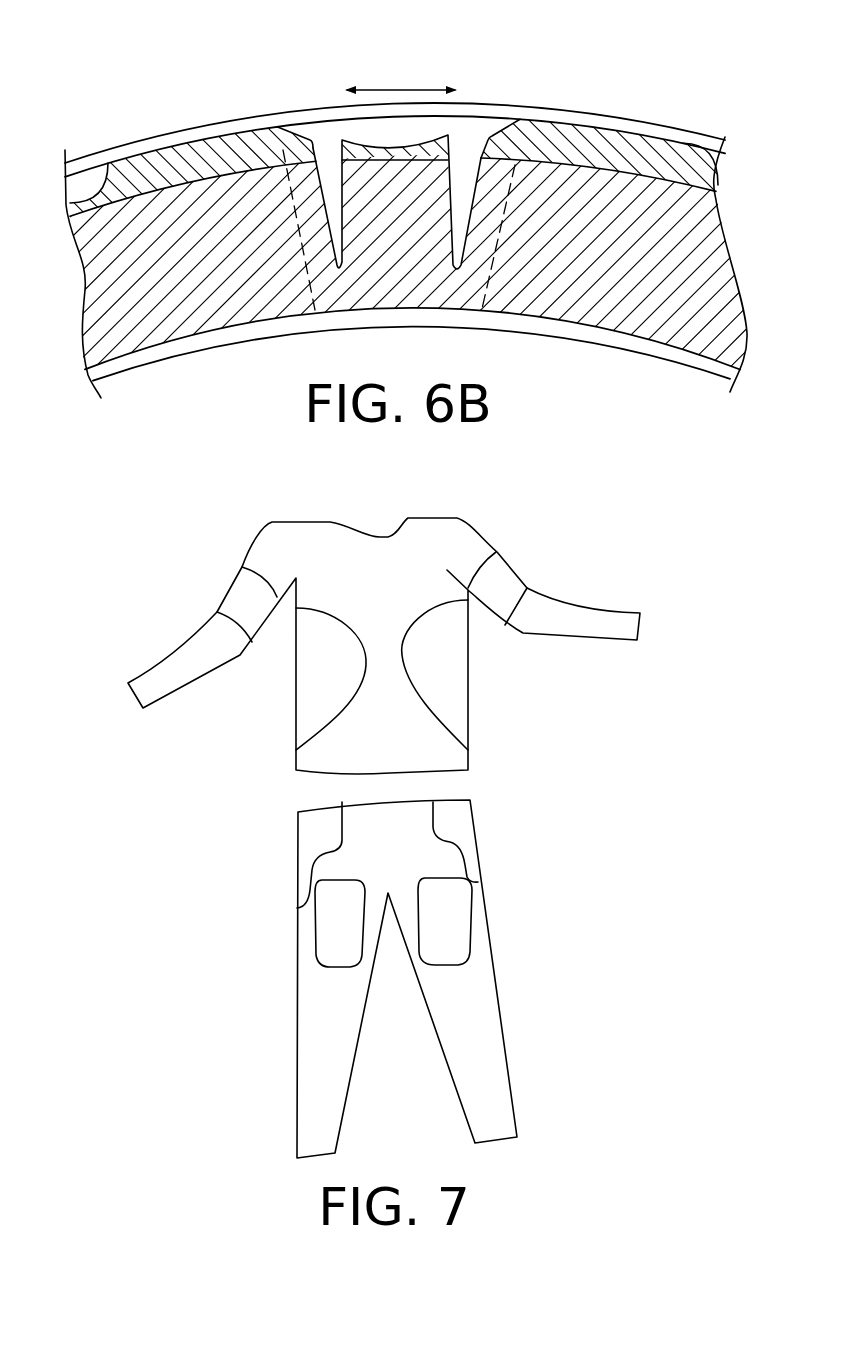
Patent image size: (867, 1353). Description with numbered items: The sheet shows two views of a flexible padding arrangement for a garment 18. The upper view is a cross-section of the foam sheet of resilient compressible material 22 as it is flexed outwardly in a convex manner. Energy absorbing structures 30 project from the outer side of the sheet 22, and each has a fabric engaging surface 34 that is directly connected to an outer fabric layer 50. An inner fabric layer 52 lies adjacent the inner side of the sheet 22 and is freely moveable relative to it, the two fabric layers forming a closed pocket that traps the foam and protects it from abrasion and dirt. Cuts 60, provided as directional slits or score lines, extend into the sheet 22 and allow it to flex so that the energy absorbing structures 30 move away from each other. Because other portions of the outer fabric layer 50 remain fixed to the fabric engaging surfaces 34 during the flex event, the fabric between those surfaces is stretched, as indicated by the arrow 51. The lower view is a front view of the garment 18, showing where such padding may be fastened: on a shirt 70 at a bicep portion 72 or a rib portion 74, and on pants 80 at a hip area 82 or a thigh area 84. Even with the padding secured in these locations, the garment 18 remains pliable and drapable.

In FIG. 7, the garment 18 is at (376, 826).
In FIG. 6B, the sheet of resilient compressible material 22 is at (702, 260).
In FIG. 6B, the energy absorbing structures 30 is at (188, 157).
In FIG. 6B, the fabric engaging surface 34 is at (215, 130).
In FIG. 6B, the outer fabric layer 50 is at (505, 110).
In FIG. 6B, the arrow 51 is at (401, 95).
In FIG. 6B, the inner fabric layer 52 is at (667, 357).
In FIG. 6B, the cuts 60 is at (313, 164).
In FIG. 7, the shirt 70 is at (483, 547).
In FIG. 7, the bicep portion 72 is at (238, 615).
In FIG. 7, the rib portion 74 is at (292, 713).
In FIG. 7, the pants 80 is at (472, 922).
In FIG. 7, the hip area 82 is at (297, 840).
In FIG. 7, the thigh area 84 is at (333, 948).